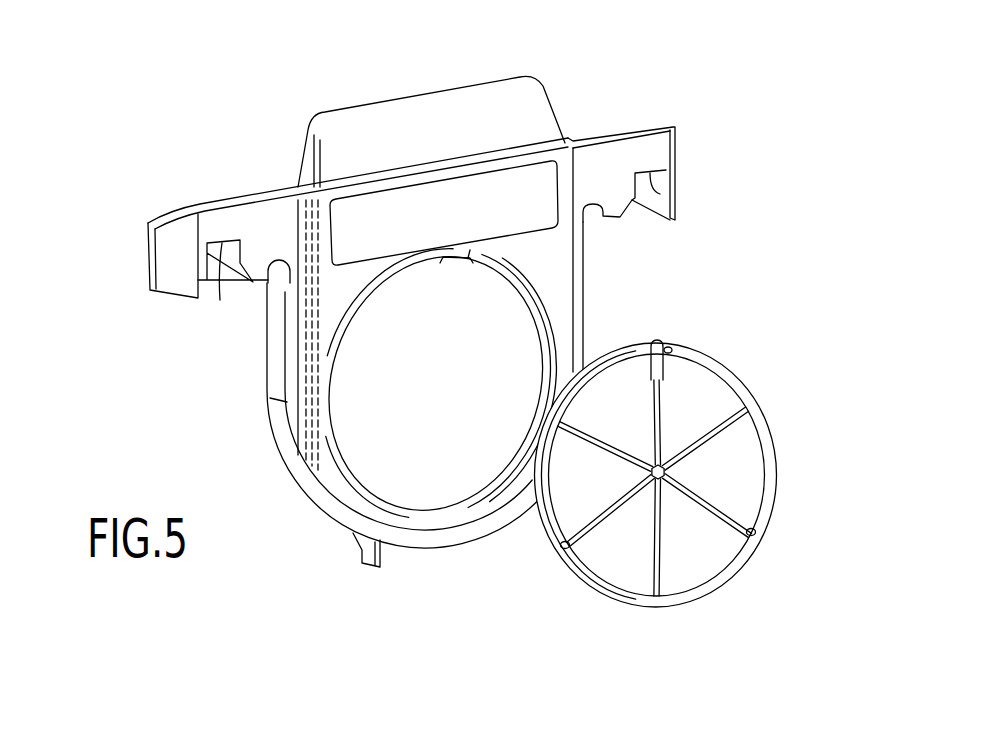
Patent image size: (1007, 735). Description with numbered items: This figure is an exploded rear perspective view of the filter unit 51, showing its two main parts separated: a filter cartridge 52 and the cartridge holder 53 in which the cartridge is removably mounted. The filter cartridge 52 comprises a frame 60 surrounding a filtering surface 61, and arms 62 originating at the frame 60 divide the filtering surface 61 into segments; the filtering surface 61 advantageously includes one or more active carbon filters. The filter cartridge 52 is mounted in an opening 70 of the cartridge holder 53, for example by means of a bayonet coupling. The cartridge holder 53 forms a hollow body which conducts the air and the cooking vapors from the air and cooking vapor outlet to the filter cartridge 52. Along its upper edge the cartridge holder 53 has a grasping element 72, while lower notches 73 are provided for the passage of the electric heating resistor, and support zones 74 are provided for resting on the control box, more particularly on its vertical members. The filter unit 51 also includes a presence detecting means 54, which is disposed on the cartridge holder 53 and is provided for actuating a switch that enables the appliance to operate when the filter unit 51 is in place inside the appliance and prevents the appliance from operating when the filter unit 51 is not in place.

The filter unit 51 is at (338, 98).
The grasping element 72 is at (462, 110).
The cartridge holder 53 is at (686, 142).
The support zones 74 is at (660, 194).
The lower notches 73 is at (590, 212).
The opening 70 is at (503, 345).
The presence detecting means 54 is at (366, 570).
The filter cartridge 52 is at (681, 442).
The filtering surface 61 is at (687, 382).
The arms 62 is at (723, 430).
The frame 60 is at (768, 470).